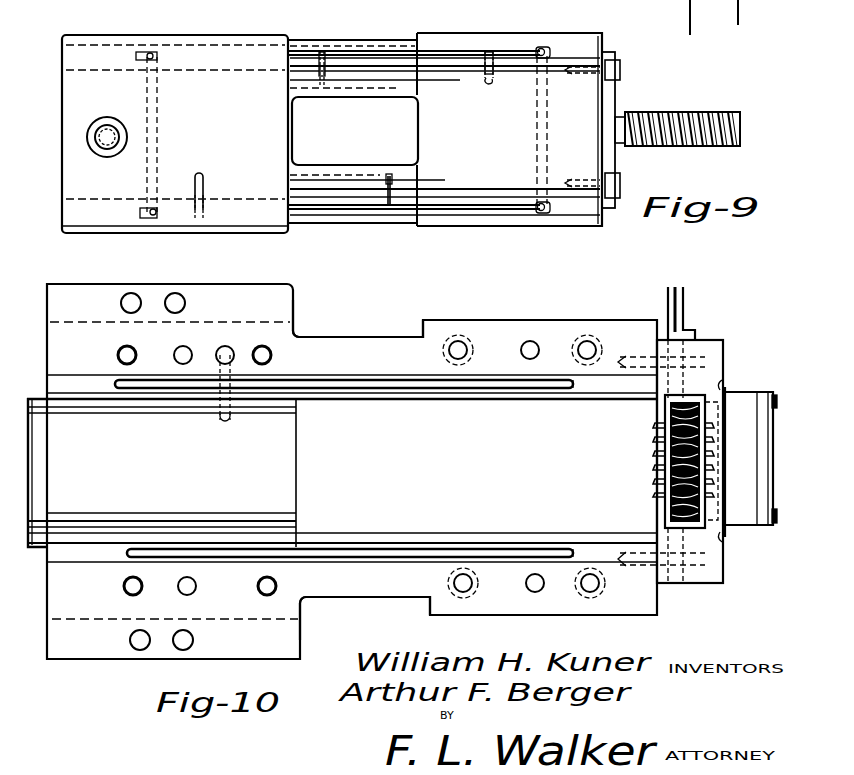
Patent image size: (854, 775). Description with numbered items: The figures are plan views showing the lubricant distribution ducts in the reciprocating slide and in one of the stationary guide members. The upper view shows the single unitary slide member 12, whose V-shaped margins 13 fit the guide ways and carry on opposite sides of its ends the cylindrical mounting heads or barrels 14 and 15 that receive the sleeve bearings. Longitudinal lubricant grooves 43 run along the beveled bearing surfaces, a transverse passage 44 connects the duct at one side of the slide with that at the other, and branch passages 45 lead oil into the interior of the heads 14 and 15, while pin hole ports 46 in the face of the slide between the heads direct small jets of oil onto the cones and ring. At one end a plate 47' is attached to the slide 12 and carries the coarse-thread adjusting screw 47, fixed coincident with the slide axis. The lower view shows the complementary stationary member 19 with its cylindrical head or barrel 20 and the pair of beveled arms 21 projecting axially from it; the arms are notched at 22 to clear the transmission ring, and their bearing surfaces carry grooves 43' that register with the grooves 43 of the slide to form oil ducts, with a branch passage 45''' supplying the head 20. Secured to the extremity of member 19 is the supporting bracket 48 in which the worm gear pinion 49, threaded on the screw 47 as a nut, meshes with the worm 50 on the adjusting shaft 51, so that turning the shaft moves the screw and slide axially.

In FIG. 9, the slide member 12 is at (594, 106).
In FIG. 9, the margins 13 is at (400, 42).
In FIG. 9, the upper mounting head 14 is at (175, 134).
In FIG. 9, the lower mounting head 15 is at (504, 226).
In FIG. 9, the longitudinal lubricant grooves 43 is at (419, 133).
In FIG. 9, the transverse passage 44 is at (546, 137).
In FIG. 9, the branch passage 45 is at (344, 135).
In FIG. 9, the pin hole ports 46 is at (388, 176).
In FIG. 9, the adjusting screw 47 is at (677, 110).
In FIG. 9, the plate 47' is at (642, 180).
In FIG. 10, the stationary member 19 is at (85, 642).
In FIG. 10, the cylindrical head 20 is at (161, 472).
In FIG. 10, the beveled arms 21 is at (578, 392).
In FIG. 10, the marginal notches 22 is at (367, 338).
In FIG. 10, the lubricant grooves 43' is at (344, 468).
In FIG. 10, the branch passage 45''' is at (202, 405).
In FIG. 10, the supporting bracket 48 is at (742, 390).
In FIG. 10, the worm gear pinion 49 is at (668, 420).
In FIG. 10, the worm 50 is at (658, 476).
In FIG. 10, the adjusting shaft 51 is at (680, 328).